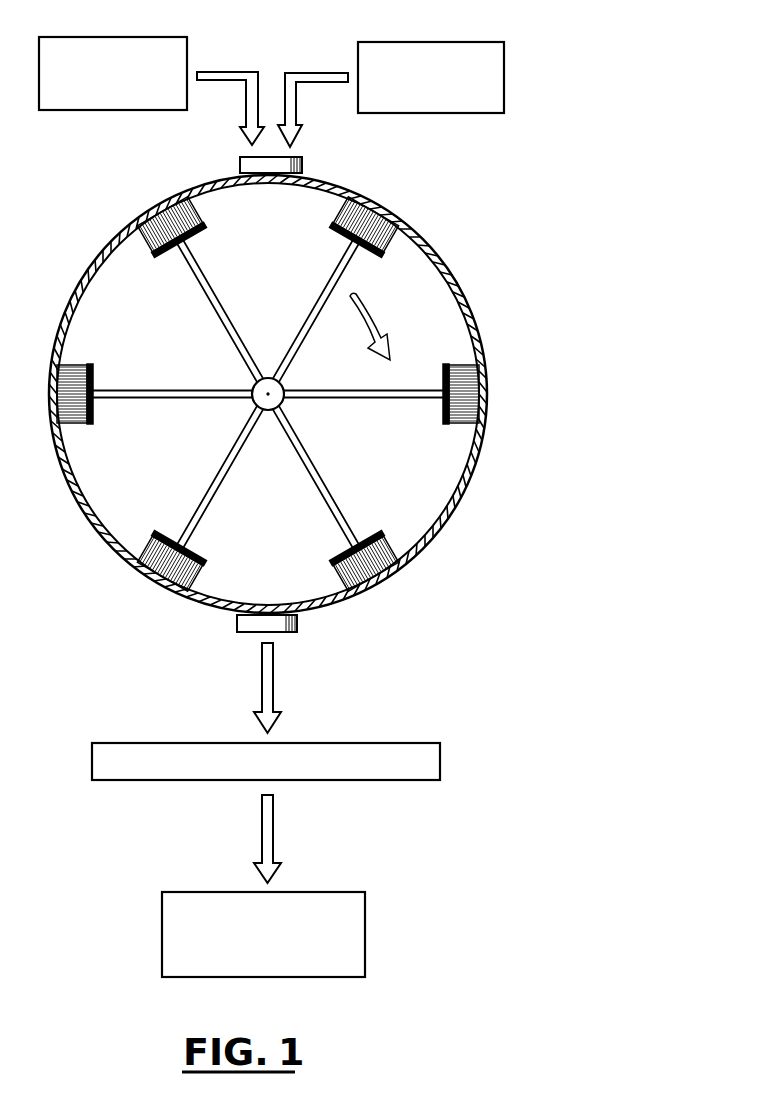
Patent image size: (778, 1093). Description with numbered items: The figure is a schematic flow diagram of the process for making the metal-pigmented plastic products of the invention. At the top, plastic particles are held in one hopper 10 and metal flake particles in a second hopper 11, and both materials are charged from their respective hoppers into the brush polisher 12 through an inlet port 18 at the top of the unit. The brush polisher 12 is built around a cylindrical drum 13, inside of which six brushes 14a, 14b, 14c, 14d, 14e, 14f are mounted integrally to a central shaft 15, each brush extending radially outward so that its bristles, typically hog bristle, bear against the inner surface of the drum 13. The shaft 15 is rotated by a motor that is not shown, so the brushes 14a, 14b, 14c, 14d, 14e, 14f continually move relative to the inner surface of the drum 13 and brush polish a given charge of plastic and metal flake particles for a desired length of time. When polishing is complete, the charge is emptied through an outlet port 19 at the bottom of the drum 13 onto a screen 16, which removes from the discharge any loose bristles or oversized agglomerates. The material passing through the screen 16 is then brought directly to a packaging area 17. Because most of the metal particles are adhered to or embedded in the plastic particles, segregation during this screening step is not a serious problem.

The hopper 10 is at (187, 40).
The hopper 11 is at (504, 46).
The brush polisher 12 is at (286, 393).
The cylindrical drum 13 is at (467, 297).
The brush 14a is at (382, 255).
The brush 14b is at (207, 220).
The brush 14c is at (91, 363).
The brush 14d is at (163, 498).
The brush 14e is at (330, 567).
The brush 14f is at (443, 420).
The shaft 15 is at (285, 386).
The screen 16 is at (142, 743).
The packaging area 17 is at (327, 892).
The port 18 is at (303, 160).
The port 19 is at (297, 628).